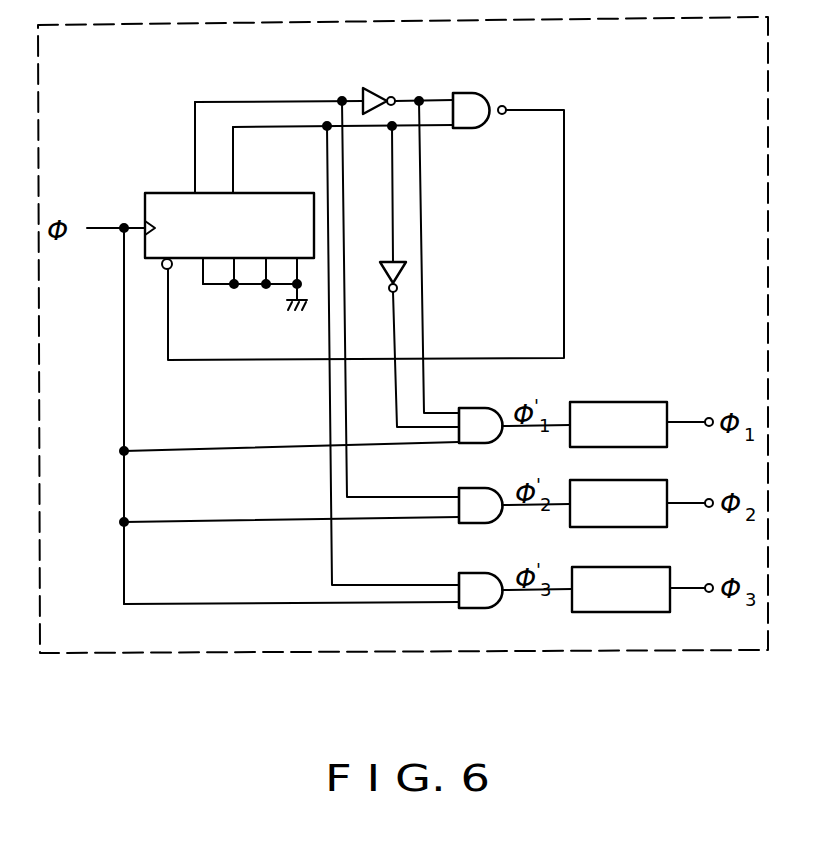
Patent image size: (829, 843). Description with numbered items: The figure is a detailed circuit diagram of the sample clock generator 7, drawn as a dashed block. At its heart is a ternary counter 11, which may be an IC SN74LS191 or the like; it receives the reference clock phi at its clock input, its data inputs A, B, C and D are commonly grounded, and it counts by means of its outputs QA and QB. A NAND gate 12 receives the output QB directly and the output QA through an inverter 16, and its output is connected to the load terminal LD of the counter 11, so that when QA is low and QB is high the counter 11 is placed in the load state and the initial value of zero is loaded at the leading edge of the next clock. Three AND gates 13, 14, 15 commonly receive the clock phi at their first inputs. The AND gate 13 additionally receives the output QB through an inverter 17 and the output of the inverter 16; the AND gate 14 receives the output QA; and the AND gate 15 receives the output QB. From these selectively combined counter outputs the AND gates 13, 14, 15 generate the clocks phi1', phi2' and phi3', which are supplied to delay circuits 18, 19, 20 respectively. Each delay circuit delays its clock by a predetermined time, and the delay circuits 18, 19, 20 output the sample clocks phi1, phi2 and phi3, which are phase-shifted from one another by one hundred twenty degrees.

The sample clock generator 7 is at (503, 651).
The ternary counter 11 is at (167, 192).
The NAND gate 12 is at (477, 90).
The AND gate 13 is at (478, 408).
The AND gate 14 is at (478, 489).
The AND gate 15 is at (481, 573).
The inverter 16 is at (371, 87).
The inverter 17 is at (388, 262).
The delay circuit 18 is at (636, 402).
The delay circuit 19 is at (648, 480).
The delay circuit 20 is at (650, 567).